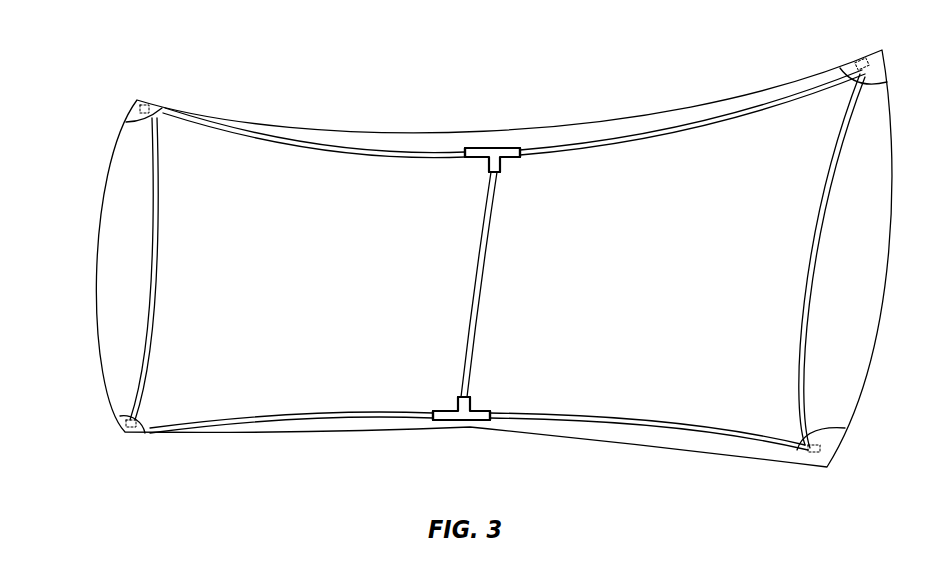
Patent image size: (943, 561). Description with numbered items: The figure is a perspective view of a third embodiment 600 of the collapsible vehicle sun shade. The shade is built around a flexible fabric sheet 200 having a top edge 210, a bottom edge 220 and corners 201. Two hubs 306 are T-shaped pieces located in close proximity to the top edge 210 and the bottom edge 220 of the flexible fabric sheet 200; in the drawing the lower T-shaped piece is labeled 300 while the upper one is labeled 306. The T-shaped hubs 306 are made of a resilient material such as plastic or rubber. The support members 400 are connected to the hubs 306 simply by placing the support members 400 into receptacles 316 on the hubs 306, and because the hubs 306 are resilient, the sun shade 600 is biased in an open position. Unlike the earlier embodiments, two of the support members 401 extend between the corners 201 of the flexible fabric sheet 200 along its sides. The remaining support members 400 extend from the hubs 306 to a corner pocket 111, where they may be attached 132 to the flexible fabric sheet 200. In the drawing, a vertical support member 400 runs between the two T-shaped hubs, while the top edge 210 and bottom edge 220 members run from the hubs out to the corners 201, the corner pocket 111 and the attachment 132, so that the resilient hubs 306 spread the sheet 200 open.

The third embodiment of the collapsible sun shade 600 is at (451, 261).
The flexible fabric sheet 200 is at (332, 251).
The corners 201 is at (136, 100).
The corner pocket 111 is at (867, 65).
The attachment 132 is at (813, 453).
The top edge 210 is at (290, 123).
The bottom edge 220 is at (285, 435).
The support members 401 is at (153, 281).
The support members 400 is at (462, 362).
The hubs 306 is at (512, 159).
The lower T-connector 300 is at (476, 410).
The receptacles 316 is at (505, 148).